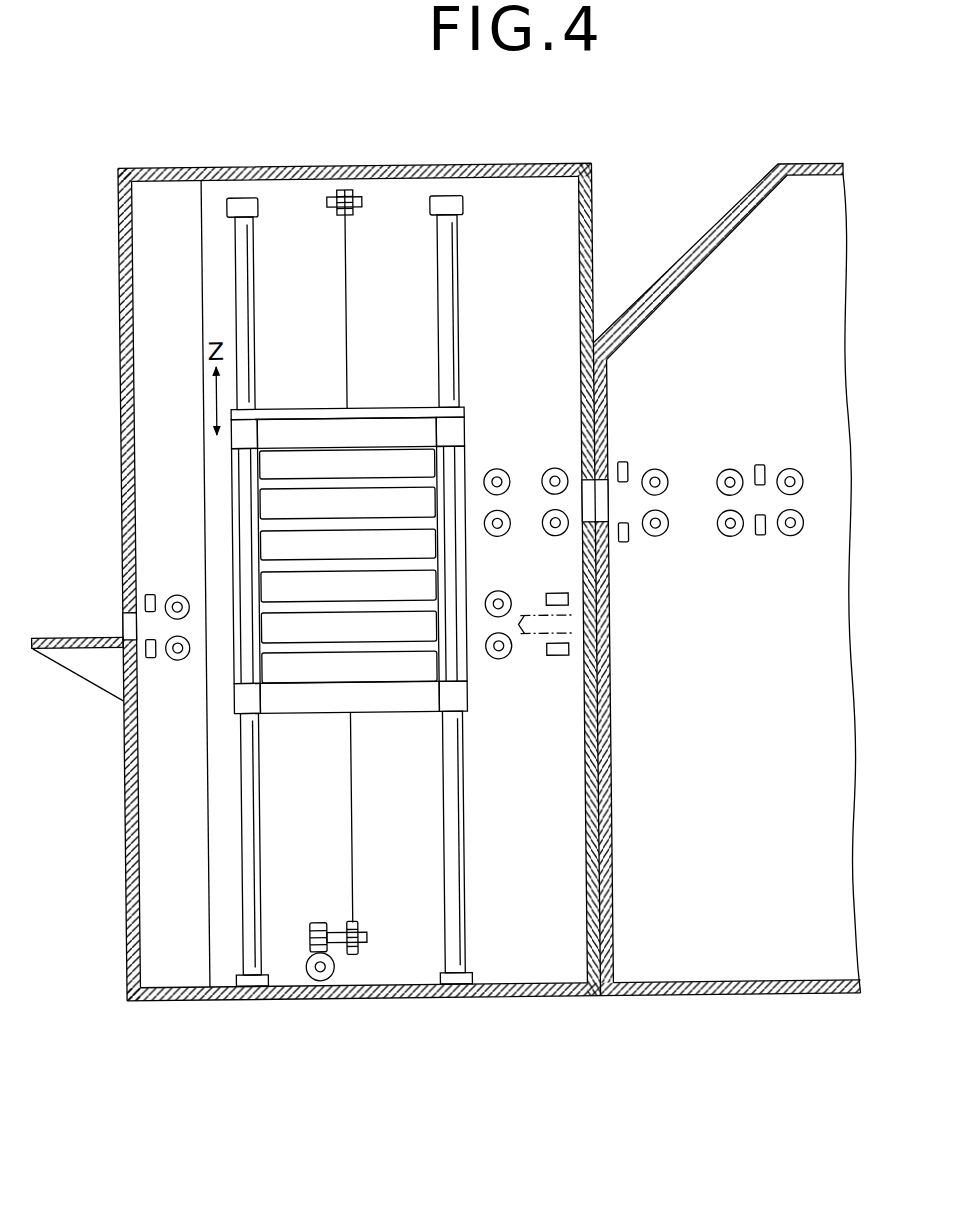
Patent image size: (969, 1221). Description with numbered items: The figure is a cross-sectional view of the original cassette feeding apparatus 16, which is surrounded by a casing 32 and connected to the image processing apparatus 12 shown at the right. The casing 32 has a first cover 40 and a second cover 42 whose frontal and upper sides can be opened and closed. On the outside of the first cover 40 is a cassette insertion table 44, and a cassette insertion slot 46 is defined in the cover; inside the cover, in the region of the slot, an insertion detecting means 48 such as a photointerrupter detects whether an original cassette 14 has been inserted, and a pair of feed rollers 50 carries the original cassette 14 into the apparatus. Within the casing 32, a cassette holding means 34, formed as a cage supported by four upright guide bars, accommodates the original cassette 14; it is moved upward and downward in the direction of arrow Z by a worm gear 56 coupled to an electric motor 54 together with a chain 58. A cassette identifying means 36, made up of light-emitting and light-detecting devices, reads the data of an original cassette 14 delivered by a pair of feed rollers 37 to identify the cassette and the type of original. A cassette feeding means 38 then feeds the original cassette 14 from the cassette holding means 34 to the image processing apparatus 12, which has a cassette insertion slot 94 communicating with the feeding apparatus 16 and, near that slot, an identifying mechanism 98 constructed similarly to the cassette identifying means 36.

The image processing apparatus 12 is at (737, 976).
The original cassette 14 is at (262, 636).
The original cassette feeding apparatus 16 is at (121, 939).
The casing 32 is at (474, 990).
The cassette holding means 34 is at (382, 723).
The cassette identifying means 36 is at (574, 588).
The feed rollers 37 is at (494, 658).
The cassette feeding means 38 is at (532, 468).
The first cover 40 is at (175, 164).
The second cover 42 is at (403, 164).
The cassette insertion table 44 is at (71, 644).
The cassette insertion slot 46 is at (122, 633).
The insertion detecting means 48 is at (150, 590).
The feed rollers 50 is at (177, 591).
The electric motor 54 is at (326, 975).
The worm gear 56 is at (323, 911).
The chain 58 is at (350, 844).
The cassette insertion slot 94 is at (603, 506).
The identifying mechanism 98 is at (766, 464).